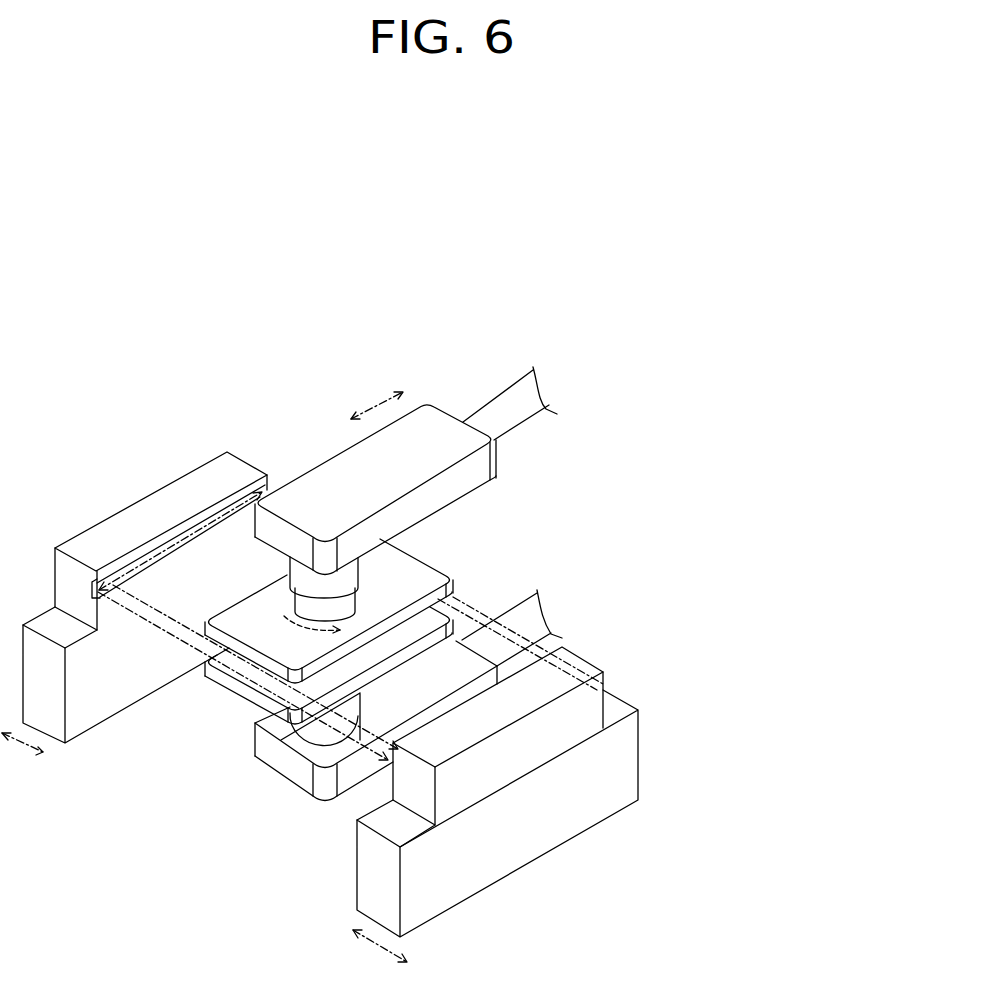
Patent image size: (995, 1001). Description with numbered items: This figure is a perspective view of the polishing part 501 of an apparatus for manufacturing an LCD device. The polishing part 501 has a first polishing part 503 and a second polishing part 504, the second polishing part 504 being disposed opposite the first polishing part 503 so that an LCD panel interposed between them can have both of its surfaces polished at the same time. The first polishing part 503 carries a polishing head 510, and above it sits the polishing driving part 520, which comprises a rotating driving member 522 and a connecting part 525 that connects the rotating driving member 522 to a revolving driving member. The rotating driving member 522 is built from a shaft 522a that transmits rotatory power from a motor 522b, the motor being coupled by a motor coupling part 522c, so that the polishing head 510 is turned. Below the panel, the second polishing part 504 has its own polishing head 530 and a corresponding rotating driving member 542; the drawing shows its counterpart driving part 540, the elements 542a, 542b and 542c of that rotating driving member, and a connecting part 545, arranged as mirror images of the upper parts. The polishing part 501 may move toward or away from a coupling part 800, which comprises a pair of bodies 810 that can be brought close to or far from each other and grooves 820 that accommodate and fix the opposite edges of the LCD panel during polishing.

The polishing part 501 is at (556, 584).
The first polishing part 503 is at (529, 525).
The second polishing part 504 is at (529, 695).
The polishing head 510 is at (443, 570).
The polishing driving part 520 is at (528, 500).
The rotating driving member 522 is at (502, 513).
The shaft 522a is at (362, 597).
The motor 522b is at (366, 563).
The motor coupling part 522c is at (490, 467).
The connecting part 525 is at (557, 413).
The polishing head 530 is at (437, 612).
The lower rotating head 540 is at (528, 695).
The rotating driving member 542 is at (502, 721).
The first layer of lower absorption block 542a is at (362, 686).
The second layer of lower absorption block 542b is at (498, 666).
The third layer of lower absorption block 542c is at (396, 747).
The lower drive shaft 545 is at (560, 632).
The coupling part 800 is at (320, 707).
The bodies 810 is at (357, 911).
The grooves 820 is at (390, 762).